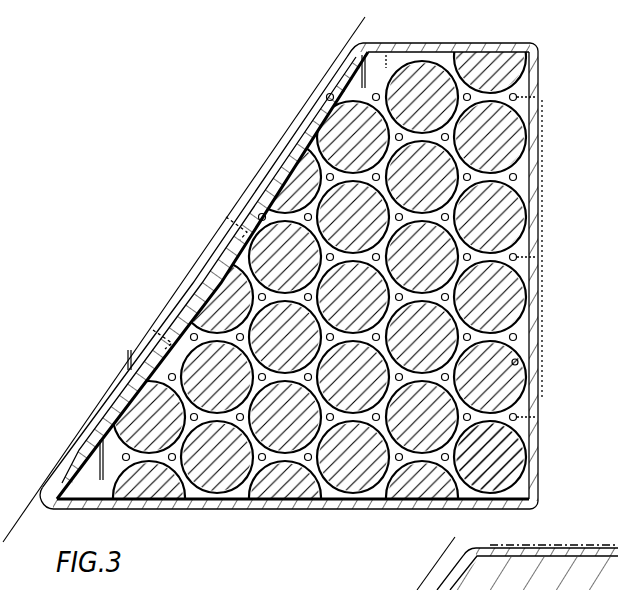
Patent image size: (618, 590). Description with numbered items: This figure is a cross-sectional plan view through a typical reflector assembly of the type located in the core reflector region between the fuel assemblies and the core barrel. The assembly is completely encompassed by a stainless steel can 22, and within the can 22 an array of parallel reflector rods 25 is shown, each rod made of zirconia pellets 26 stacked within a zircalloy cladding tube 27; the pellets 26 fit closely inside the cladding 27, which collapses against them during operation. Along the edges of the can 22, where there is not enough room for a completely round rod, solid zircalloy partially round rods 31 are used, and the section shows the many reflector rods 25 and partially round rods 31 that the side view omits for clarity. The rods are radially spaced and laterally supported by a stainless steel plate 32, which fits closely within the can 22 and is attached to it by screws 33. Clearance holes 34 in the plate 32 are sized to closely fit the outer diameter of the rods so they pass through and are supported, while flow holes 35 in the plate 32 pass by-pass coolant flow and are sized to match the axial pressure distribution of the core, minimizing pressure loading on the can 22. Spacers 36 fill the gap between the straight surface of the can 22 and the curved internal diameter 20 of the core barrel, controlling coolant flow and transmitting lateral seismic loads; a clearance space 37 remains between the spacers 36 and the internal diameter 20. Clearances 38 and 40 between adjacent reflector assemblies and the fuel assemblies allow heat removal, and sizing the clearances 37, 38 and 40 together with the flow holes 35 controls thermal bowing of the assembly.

The internal diameter of the core barrel 20 is at (36, 506).
The can 22 is at (539, 230).
The reflector rods 25 is at (520, 402).
The zirconia pellets 26 is at (513, 463).
The zircalloy cladding tube 27 is at (520, 440).
The partially round rods 31 is at (215, 277).
The plates 32 is at (522, 327).
The screws 33 is at (143, 323).
The clearance holes 34 is at (518, 361).
The flow holes 35 is at (516, 177).
The spacers 36 is at (264, 163).
The clearance space 37 is at (57, 461).
The clearance 38 is at (541, 101).
The clearance 40 is at (517, 44).